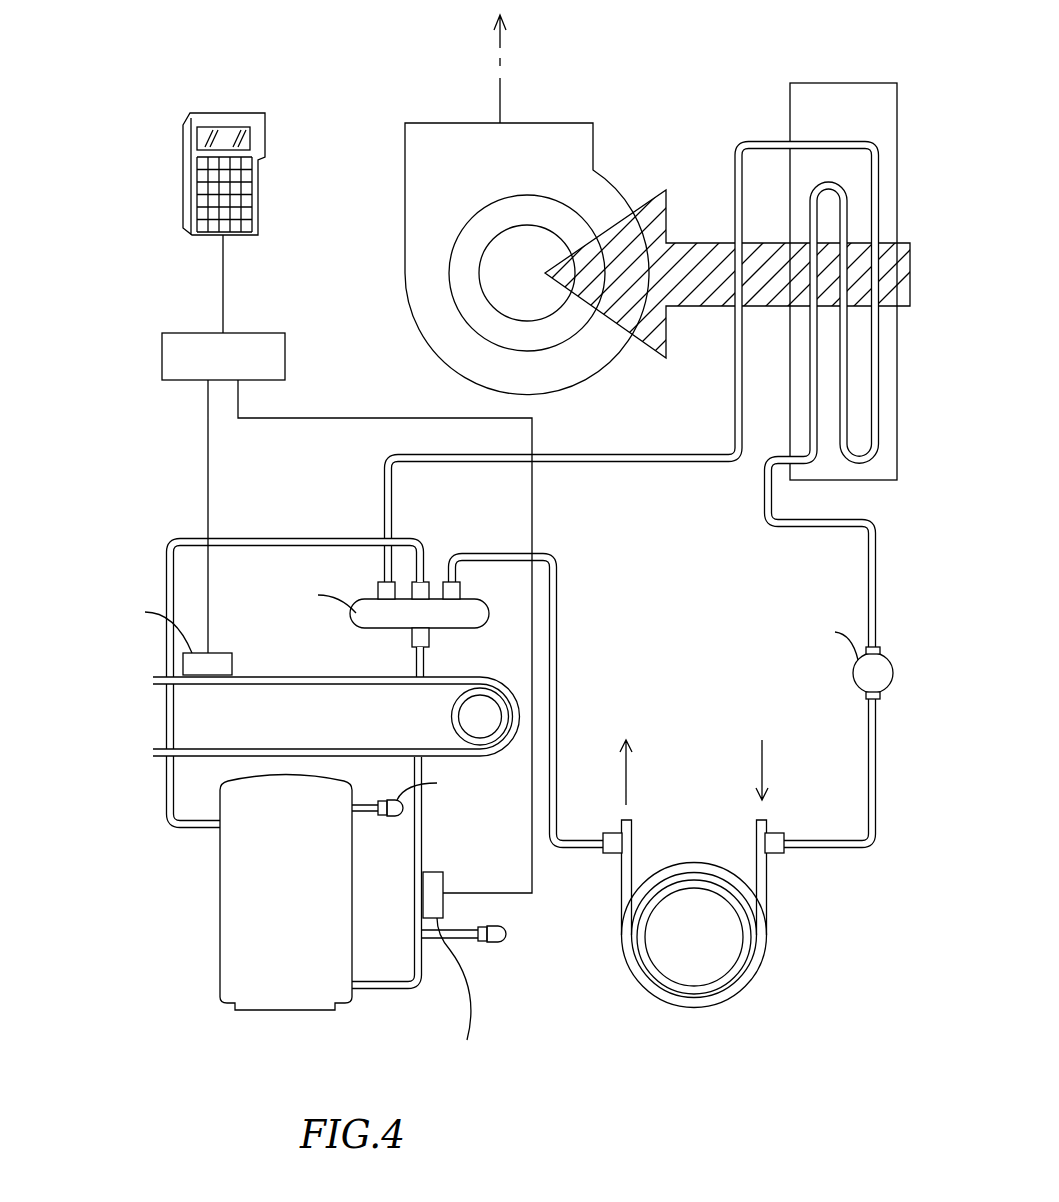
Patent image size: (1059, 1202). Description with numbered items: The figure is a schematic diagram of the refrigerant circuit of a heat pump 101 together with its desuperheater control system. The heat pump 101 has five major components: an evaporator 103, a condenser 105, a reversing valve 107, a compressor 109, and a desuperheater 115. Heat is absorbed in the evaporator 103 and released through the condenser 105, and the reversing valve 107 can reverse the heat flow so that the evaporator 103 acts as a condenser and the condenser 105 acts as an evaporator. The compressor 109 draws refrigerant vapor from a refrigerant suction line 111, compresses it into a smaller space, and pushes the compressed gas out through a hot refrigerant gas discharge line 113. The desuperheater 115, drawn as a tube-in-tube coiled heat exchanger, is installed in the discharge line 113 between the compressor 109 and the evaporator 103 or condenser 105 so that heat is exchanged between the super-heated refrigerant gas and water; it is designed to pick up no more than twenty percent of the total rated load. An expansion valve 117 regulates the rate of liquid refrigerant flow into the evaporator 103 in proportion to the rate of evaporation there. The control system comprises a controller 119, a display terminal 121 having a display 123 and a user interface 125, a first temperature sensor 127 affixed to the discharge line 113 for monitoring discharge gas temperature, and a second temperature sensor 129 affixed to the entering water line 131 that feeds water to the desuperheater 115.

The heat pump 101 is at (650, 104).
The evaporator 103 is at (790, 108).
The condenser 105 is at (740, 990).
The reversing valve 107 is at (375, 630).
The compressor 109 is at (220, 955).
The refrigerant suction line 111 is at (218, 835).
The hot refrigerant gas discharge line 113 is at (355, 990).
The desuperheater 115 is at (500, 688).
The expansion valve 117 is at (858, 688).
The controller 119 is at (285, 353).
The display terminal 121 is at (249, 98).
The display 123 is at (205, 135).
The user interface 125 is at (255, 192).
The first temperature sensor 127 is at (435, 872).
The second temperature sensor 129 is at (226, 653).
The entering water line 131 is at (161, 684).